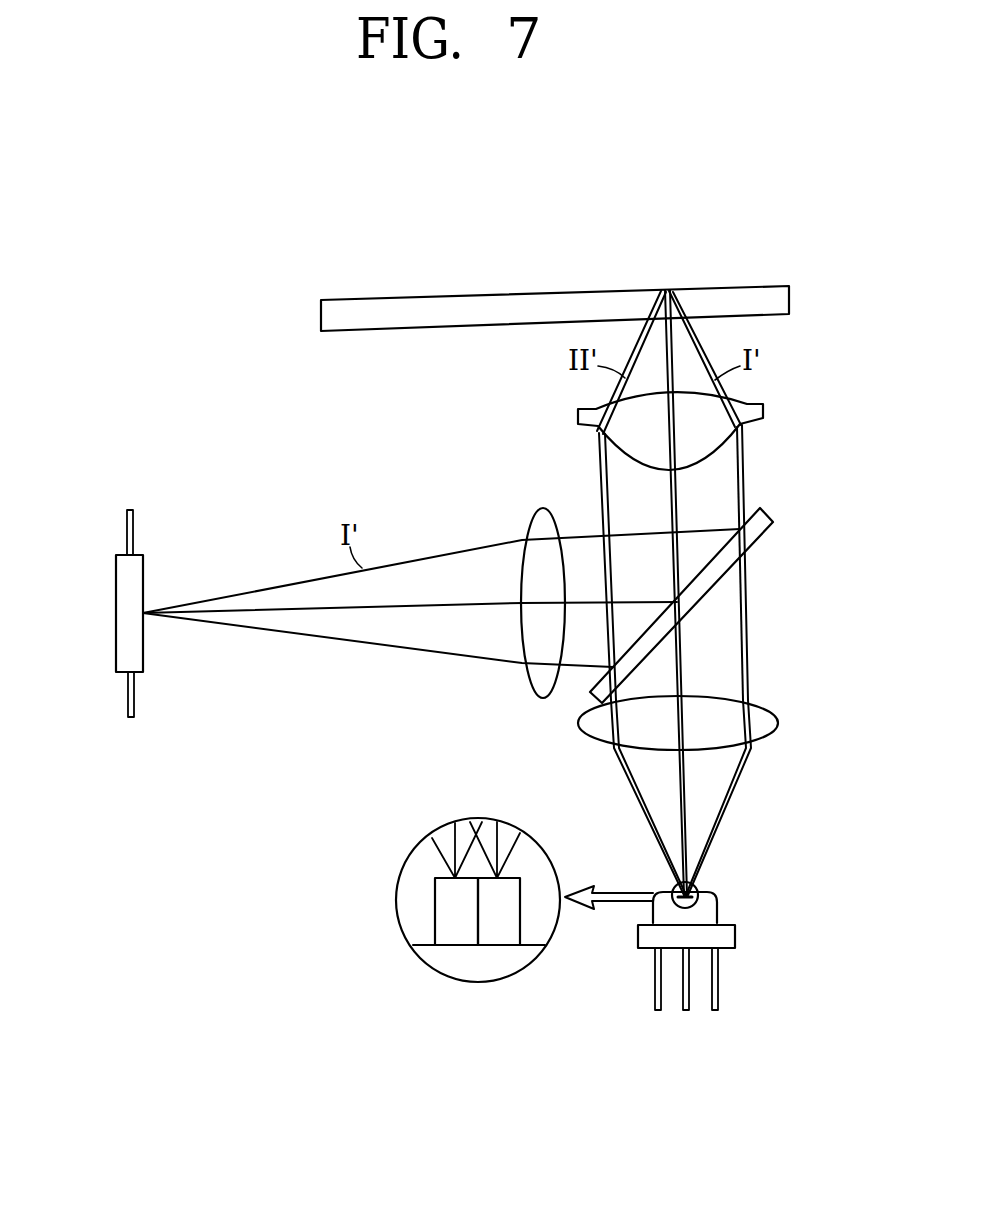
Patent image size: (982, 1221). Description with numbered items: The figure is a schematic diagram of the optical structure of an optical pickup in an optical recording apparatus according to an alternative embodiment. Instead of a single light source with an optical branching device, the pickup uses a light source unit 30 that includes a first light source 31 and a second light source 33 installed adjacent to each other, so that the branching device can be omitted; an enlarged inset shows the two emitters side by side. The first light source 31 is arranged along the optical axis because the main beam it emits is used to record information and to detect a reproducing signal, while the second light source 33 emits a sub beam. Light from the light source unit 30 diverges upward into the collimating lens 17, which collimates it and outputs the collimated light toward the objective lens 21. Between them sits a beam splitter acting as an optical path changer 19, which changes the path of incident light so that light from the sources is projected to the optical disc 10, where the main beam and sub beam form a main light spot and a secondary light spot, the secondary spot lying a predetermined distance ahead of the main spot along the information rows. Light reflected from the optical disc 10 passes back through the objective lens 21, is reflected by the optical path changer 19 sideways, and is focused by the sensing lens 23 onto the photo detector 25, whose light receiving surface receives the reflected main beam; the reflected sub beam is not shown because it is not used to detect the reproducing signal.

The optical disc 10 is at (788, 293).
The objective lens 21 is at (762, 407).
The optical path changer 19 is at (752, 543).
The collimating lens 17 is at (772, 722).
The sensing lens 23 is at (543, 697).
The photo detector 25 is at (118, 567).
The light source unit 30 is at (742, 906).
The first light source 31 is at (450, 935).
The second light source 33 is at (505, 935).